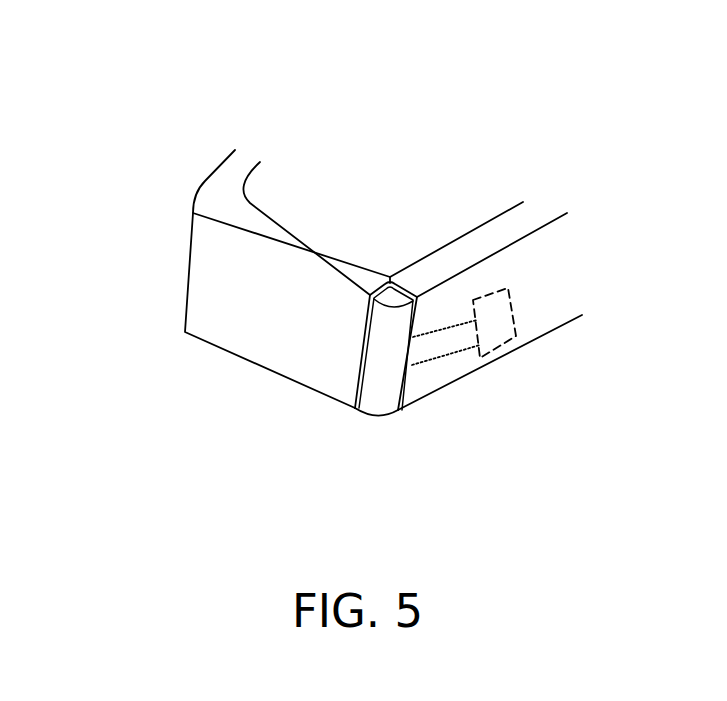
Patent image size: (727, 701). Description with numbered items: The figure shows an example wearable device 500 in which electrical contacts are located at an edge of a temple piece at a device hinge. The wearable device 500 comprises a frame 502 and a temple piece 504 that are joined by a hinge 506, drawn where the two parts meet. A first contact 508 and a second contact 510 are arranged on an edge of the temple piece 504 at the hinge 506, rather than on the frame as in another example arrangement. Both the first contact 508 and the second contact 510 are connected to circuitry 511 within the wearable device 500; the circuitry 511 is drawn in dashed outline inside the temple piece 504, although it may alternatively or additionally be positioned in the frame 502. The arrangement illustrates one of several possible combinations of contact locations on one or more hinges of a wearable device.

The wearable device 500 is at (77, 110).
The frame 502 is at (188, 277).
The temple piece 504 is at (532, 230).
The hinge 506 is at (342, 347).
The first contact 508 is at (423, 318).
The second contact 510 is at (420, 376).
The circuitry 511 is at (515, 333).